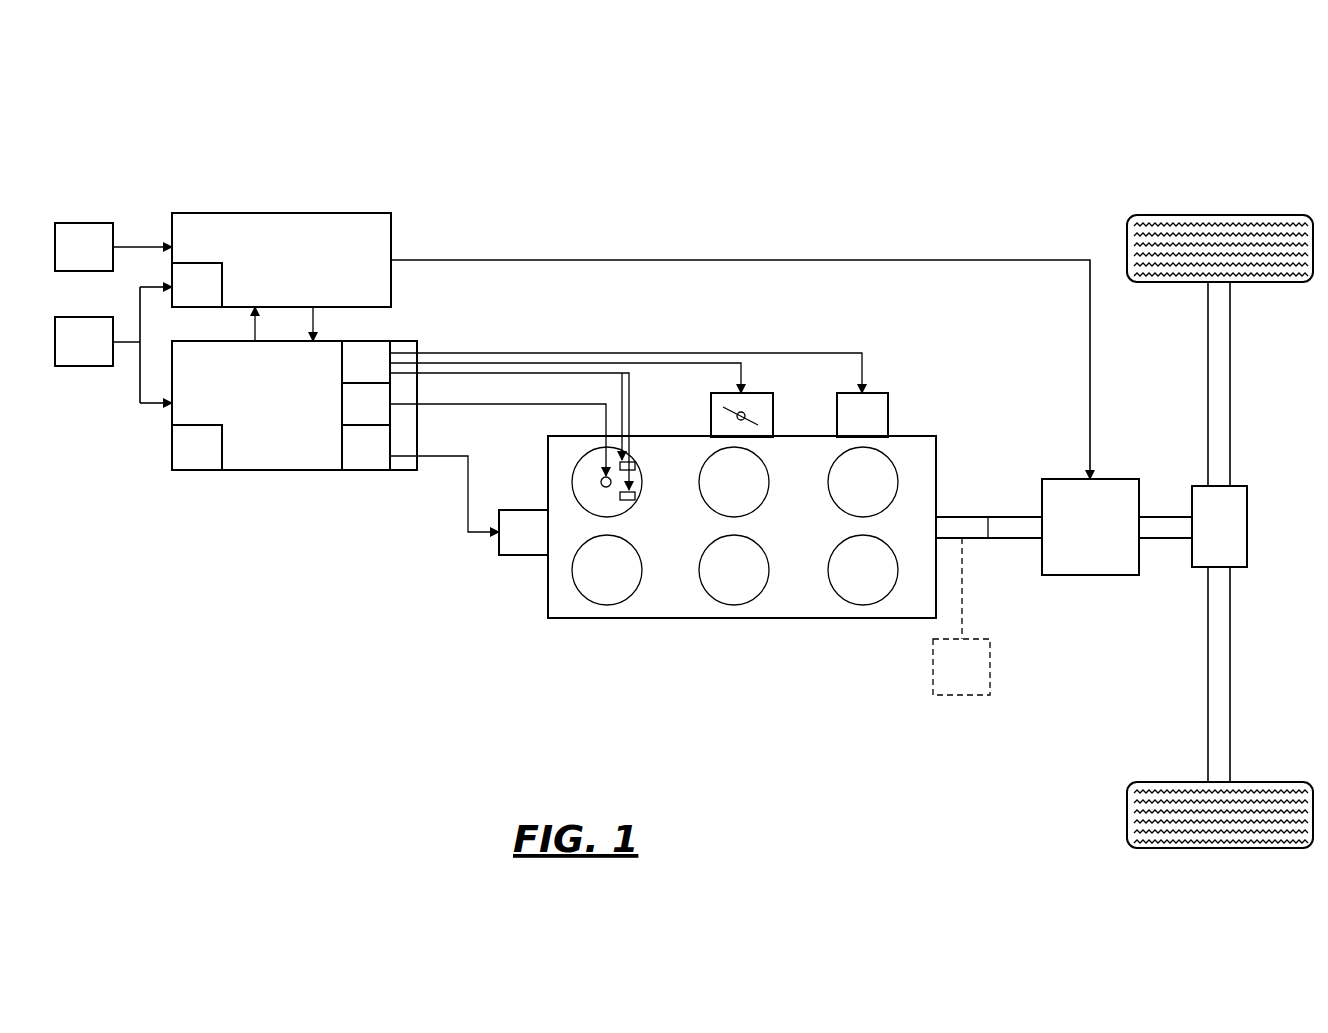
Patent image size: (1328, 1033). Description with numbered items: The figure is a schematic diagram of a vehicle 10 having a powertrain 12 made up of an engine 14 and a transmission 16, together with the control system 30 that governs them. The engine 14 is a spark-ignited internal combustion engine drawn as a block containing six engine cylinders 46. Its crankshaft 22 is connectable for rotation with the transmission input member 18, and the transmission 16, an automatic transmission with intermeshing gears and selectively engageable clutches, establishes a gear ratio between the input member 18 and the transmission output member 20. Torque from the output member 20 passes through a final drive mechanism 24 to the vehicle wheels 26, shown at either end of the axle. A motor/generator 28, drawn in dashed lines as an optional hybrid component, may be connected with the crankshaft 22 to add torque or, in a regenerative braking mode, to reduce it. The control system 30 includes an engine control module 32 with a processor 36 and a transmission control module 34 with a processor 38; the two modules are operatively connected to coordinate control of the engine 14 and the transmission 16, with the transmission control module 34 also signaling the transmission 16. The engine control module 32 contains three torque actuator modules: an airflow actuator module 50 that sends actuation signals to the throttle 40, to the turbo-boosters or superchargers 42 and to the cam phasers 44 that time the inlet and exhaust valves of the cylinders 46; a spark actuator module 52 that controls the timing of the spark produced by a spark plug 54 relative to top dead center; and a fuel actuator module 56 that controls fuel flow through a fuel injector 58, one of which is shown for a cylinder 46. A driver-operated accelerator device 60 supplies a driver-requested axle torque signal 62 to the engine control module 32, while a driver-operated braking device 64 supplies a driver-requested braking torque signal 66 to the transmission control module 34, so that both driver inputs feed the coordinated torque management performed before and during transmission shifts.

The vehicle 10 is at (1013, 165).
The powertrain 12 is at (742, 543).
The engine 14 is at (742, 527).
The transmission 16 is at (1090, 527).
The transmission input member 18 is at (1015, 517).
The transmission output member 20 is at (1165, 517).
The crankshaft 22 is at (952, 517).
The final drive mechanism 24 is at (1238, 486).
The vehicle wheels 26 is at (1218, 215).
The motor/generator 28 is at (961, 616).
The control system 30 is at (254, 494).
The engine control module 32 is at (294, 405).
The transmission control module 34 is at (631, 346).
The processor 36 is at (197, 447).
The processor 38 is at (197, 285).
The throttle 40 is at (775, 416).
The turbo-boosters or superchargers 42 is at (862, 415).
The cam phasers 44 is at (636, 466).
The engine cylinders 46 is at (735, 526).
The airflow actuator module 50 is at (602, 415).
The spark actuator module 52 is at (474, 429).
The spark plug 54 is at (604, 500).
The fuel actuator module 56 is at (420, 478).
The fuel injector 58 is at (523, 532).
The accelerator device 60 is at (113, 345).
The driver-requested axle torque signal 62 is at (137, 383).
The braking device 64 is at (113, 247).
The driver-requested braking torque signal 66 is at (143, 243).